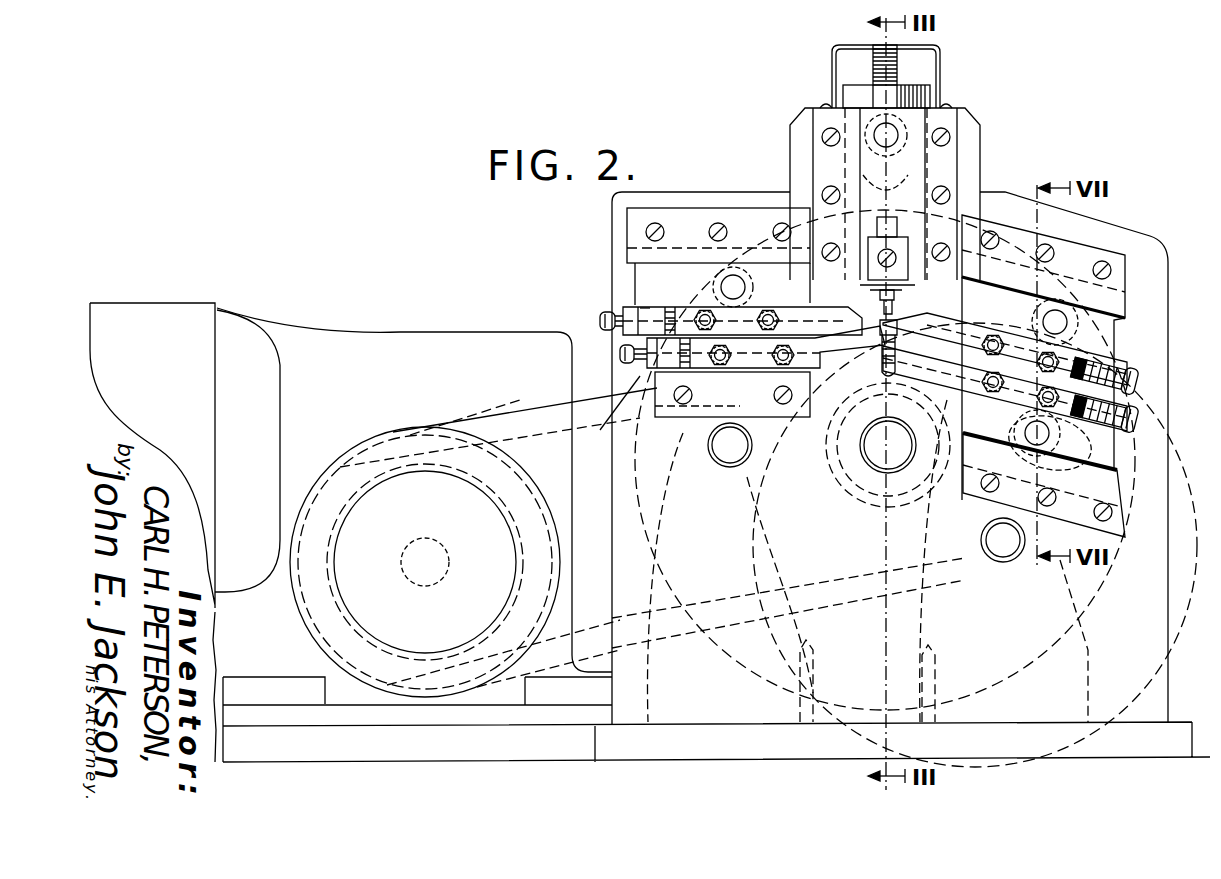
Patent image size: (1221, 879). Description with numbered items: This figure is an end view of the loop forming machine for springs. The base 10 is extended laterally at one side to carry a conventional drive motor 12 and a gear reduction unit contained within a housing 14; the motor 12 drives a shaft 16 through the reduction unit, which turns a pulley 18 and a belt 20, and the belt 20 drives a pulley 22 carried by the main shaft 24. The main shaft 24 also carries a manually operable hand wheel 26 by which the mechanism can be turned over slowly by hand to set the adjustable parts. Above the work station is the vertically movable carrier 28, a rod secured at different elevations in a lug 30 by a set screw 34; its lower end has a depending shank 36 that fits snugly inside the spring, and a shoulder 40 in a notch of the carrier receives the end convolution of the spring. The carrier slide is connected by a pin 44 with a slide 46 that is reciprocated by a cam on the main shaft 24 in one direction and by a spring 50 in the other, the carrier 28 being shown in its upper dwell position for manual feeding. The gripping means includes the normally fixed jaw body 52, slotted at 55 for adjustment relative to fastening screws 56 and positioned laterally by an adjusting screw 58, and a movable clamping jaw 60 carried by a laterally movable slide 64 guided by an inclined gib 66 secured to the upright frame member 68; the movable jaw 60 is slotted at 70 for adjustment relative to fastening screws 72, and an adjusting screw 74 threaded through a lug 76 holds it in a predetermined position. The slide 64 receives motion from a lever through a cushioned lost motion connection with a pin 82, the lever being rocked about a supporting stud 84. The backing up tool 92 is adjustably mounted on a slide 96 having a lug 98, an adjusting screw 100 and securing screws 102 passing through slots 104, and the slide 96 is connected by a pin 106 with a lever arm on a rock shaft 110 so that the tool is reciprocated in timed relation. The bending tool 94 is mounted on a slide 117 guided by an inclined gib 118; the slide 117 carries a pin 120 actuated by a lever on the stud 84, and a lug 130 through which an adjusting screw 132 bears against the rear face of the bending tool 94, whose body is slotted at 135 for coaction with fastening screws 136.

The base 10 is at (655, 757).
The drive motor 12 is at (152, 312).
The housing 14 is at (390, 345).
The shaft 16 is at (402, 561).
The pulley 18 is at (340, 462).
The belt 20 is at (587, 390).
The pulley 22 is at (773, 535).
The main shaft 24 is at (880, 445).
The hand wheel 26 is at (745, 660).
The carrier 28 is at (880, 218).
The lug 30 is at (900, 222).
The set screw 34 is at (905, 245).
The shank 36 is at (900, 305).
The shoulder 40 is at (870, 302).
The pin 44 is at (927, 100).
The slide 46 is at (843, 103).
The spring 50 is at (873, 75).
The jaw body 52 is at (755, 352).
The slot 55 is at (611, 411).
The fastening screws 56 is at (700, 362).
The adjusting screw 58 is at (624, 353).
The movable clamping jaw 60 is at (898, 355).
The slide 64 is at (1105, 460).
The inclined gib 66 is at (1120, 505).
The upright frame member 68 is at (1140, 248).
The slot 70 is at (912, 455).
The fastening screws 72 is at (935, 495).
The adjusting screw 74 is at (1148, 422).
The lug 76 is at (1120, 412).
The pin 82 is at (1042, 445).
The supporting stud 84 is at (1005, 560).
The backing up tool 92 is at (795, 312).
The bending tool 94 is at (960, 342).
The slide 96 is at (645, 312).
The lug 98 is at (645, 310).
The adjusting screw 100 is at (604, 318).
The securing screws 102 is at (703, 310).
The slots 104 is at (640, 300).
The pin 106 is at (735, 285).
The rock shaft 110 is at (728, 455).
The slide 117 is at (1078, 330).
The inclined gib 118 is at (1118, 283).
The pin 120 is at (1062, 322).
The lug 130 is at (1100, 362).
The adjusting screw 132 is at (1142, 382).
The slot 135 is at (1010, 345).
The fastening screws 136 is at (993, 337).